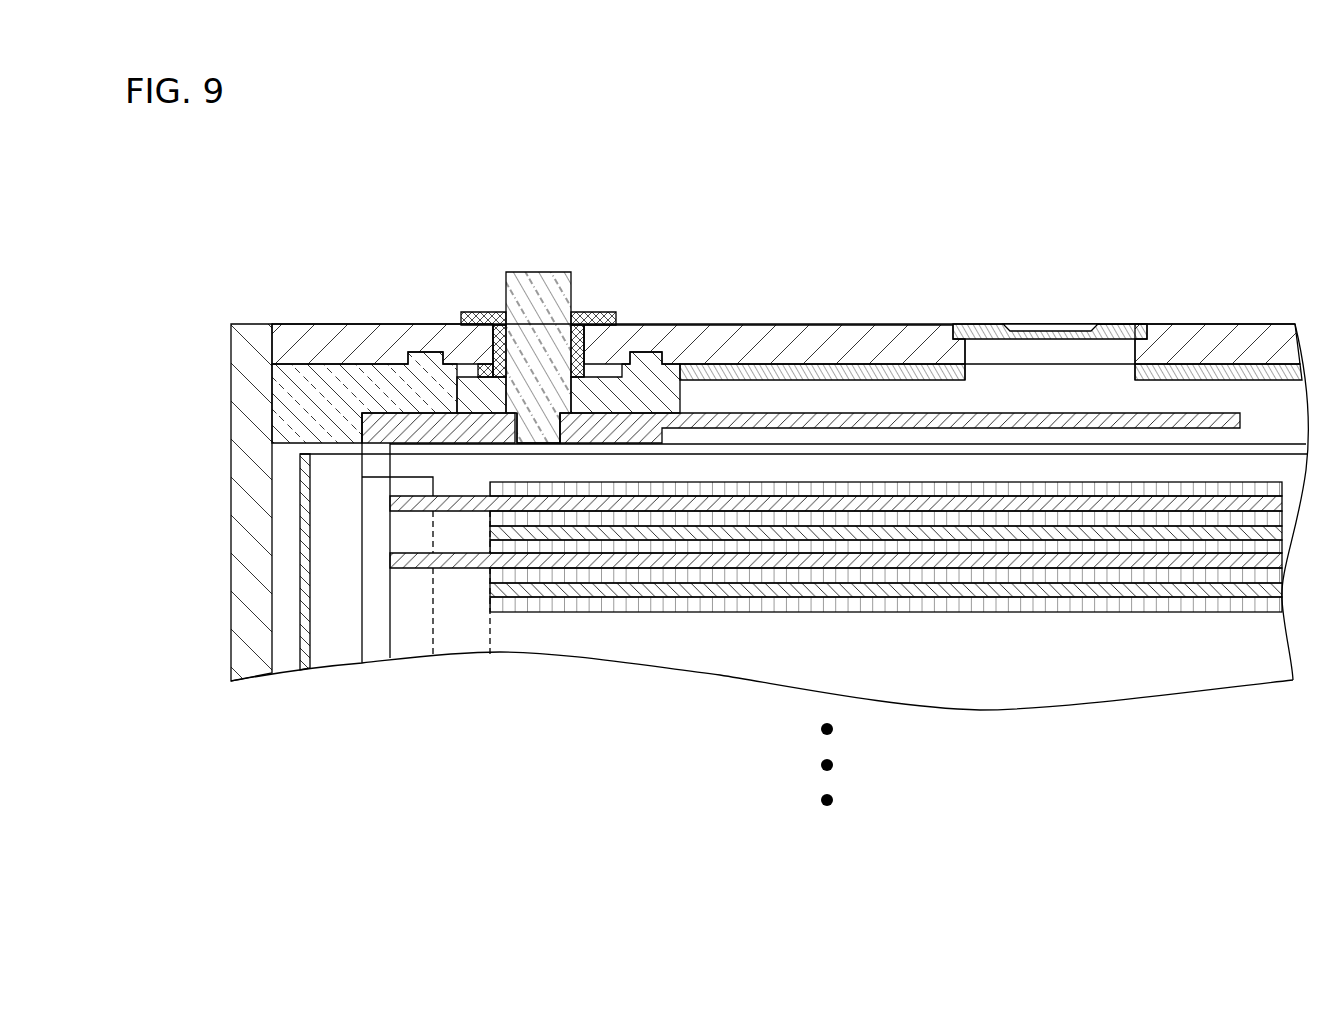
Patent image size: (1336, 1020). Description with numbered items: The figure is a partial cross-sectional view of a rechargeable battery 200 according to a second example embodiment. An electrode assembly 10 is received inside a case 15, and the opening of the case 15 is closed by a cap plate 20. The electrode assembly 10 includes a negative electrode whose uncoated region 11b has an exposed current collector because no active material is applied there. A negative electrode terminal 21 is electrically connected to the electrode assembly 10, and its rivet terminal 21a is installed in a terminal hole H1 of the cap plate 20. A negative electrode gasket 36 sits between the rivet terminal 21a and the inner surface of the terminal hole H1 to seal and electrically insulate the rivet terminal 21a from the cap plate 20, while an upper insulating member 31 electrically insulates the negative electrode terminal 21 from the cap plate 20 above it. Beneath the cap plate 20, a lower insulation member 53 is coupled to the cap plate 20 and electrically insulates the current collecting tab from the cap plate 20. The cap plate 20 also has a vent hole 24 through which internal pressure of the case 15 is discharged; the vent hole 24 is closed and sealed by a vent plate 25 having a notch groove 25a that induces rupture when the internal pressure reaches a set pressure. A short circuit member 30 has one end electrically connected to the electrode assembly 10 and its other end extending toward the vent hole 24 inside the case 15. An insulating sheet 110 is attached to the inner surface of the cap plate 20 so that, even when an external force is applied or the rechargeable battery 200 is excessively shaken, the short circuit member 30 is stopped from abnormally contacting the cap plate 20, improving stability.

The rechargeable battery 200 is at (816, 174).
The case 15 is at (253, 538).
The lower insulation member 53 is at (303, 397).
The cap plate 20 is at (721, 340).
The negative electrode gasket 36 is at (440, 327).
The terminal hole H1 is at (505, 342).
The upper insulating member 31 is at (595, 322).
The negative electrode terminal 21 is at (549, 272).
The rivet terminal 21a is at (542, 436).
The short circuit member 30 is at (818, 418).
The insulating sheet 110 is at (900, 372).
The vent hole 24 is at (963, 357).
The notch groove 25a is at (1068, 326).
The vent plate 25 is at (1138, 337).
The uncoated region 11b is at (460, 566).
The electrode assembly 10 is at (1027, 612).